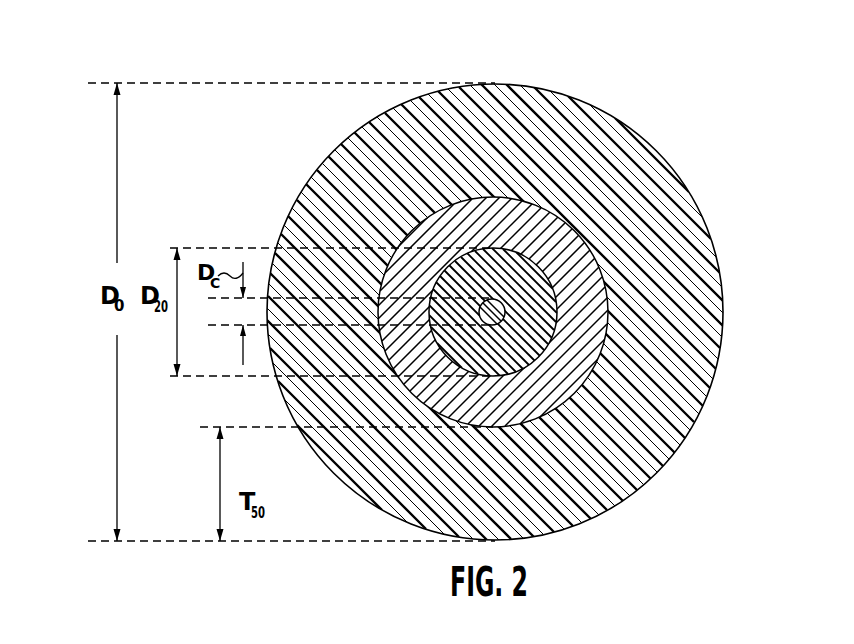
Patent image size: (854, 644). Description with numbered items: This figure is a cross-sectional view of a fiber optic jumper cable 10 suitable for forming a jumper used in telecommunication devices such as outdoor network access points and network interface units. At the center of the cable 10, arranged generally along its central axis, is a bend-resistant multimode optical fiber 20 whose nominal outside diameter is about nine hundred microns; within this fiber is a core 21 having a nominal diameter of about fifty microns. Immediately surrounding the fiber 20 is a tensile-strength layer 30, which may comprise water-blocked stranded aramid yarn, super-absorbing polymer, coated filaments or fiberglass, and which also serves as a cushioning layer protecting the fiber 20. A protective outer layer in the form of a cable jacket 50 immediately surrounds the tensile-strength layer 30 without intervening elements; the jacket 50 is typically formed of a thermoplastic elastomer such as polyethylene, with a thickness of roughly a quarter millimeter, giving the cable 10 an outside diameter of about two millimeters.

The fiber optic jumper cable 10 is at (270, 70).
The cable jacket 50 is at (645, 207).
The tensile-strength layer 30 is at (597, 273).
The bend-resistant multimode optical fiber 20 is at (518, 365).
The core 21 is at (505, 313).